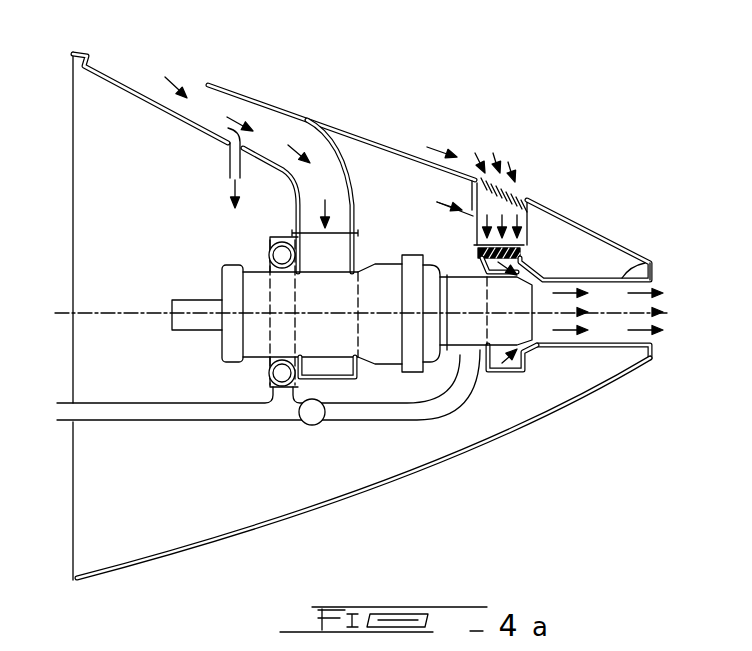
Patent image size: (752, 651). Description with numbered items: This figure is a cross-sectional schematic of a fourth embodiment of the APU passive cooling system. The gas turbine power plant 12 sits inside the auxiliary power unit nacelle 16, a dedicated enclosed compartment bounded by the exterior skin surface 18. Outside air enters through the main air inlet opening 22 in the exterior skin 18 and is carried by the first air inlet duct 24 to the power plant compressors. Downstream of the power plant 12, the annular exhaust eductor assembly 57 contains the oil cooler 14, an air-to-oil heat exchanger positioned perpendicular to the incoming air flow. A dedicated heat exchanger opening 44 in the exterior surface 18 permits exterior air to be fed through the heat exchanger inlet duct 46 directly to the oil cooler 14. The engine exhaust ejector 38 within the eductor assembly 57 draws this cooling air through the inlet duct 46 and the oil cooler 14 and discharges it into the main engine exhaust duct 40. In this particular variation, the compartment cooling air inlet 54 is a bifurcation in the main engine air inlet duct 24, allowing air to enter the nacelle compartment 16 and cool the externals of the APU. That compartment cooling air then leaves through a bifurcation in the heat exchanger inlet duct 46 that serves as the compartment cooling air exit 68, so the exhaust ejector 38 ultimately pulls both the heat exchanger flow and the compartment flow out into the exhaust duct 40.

The gas turbine power plant 12 is at (408, 372).
The oil cooler 14 is at (520, 255).
The auxiliary power unit nacelle 16 is at (100, 190).
The exterior skin surface 18 is at (158, 557).
The main air inlet opening 22 is at (148, 80).
The first air inlet duct 24 is at (240, 88).
The engine exhaust ejector 38 is at (537, 350).
The main engine exhaust duct 40 is at (650, 263).
The dedicated heat exchanger opening 44 is at (527, 200).
The heat exchanger inlet duct 46 is at (525, 262).
The compartment cooling air inlet 54 is at (228, 160).
The exhaust eductor assembly 57 is at (510, 372).
The compartment cooling air exit 68 is at (472, 182).